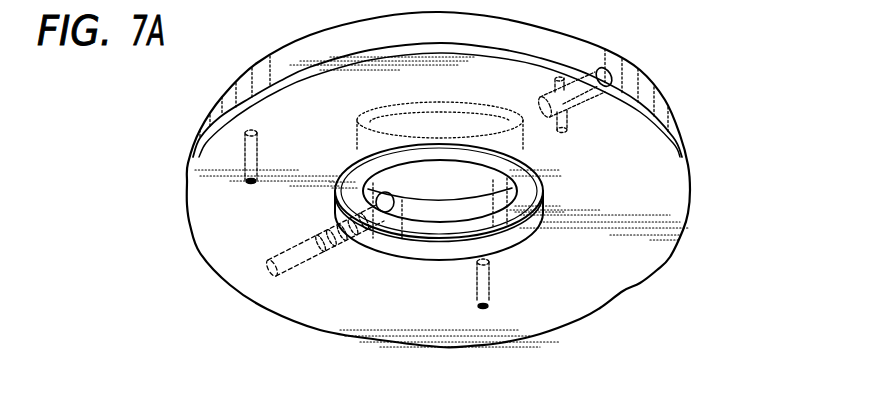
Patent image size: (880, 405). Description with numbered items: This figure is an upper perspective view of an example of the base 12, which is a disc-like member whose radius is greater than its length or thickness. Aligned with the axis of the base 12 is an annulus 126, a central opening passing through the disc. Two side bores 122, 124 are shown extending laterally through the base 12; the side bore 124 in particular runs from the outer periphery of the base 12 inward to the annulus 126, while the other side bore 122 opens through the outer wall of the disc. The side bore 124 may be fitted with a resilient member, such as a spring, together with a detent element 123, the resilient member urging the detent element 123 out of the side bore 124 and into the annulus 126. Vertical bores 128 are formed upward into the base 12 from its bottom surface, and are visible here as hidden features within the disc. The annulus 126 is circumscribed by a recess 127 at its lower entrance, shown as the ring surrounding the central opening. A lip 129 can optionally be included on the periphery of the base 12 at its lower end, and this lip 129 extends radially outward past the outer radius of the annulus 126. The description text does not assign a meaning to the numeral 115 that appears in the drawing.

The base 12 is at (168, 265).
The threaded portion 115 is at (329, 251).
The side bore 122 is at (610, 68).
The detent element 123 is at (396, 204).
The side bore 124 is at (279, 279).
The annulus 126 is at (488, 212).
The recess 127 is at (541, 212).
The vertical bores 128 is at (483, 310).
The lip 129 is at (679, 233).